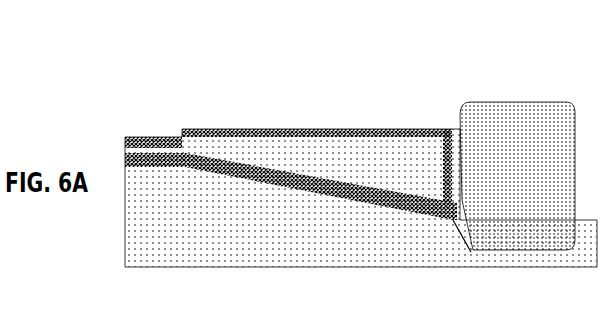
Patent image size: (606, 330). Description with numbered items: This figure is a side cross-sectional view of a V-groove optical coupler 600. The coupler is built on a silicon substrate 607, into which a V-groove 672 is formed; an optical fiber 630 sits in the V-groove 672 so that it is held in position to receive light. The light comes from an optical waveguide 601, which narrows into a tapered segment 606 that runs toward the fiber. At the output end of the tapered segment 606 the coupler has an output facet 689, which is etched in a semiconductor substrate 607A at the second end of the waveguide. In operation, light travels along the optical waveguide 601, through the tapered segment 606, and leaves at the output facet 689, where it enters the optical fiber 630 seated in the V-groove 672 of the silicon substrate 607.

The V-groove optical coupler 600 is at (367, 63).
The optical waveguide 601 is at (122, 90).
The tapered segment 606 is at (410, 225).
The silicon substrate 607 is at (143, 232).
The semiconductor substrate 607A is at (263, 155).
The optical fiber 630 is at (518, 100).
The V-groove 672 is at (466, 243).
The output facet 689 is at (445, 143).